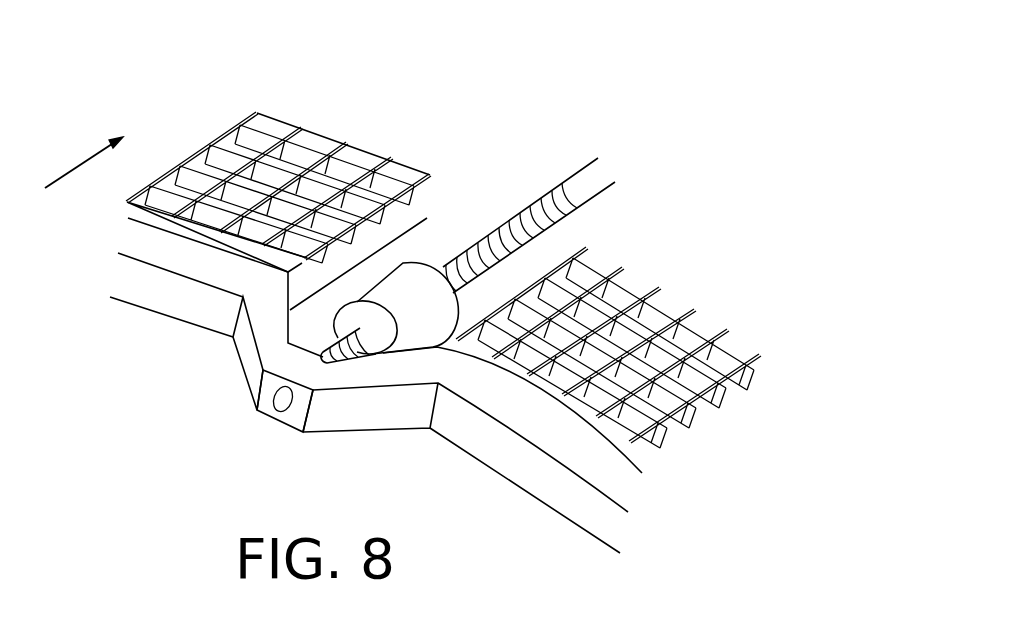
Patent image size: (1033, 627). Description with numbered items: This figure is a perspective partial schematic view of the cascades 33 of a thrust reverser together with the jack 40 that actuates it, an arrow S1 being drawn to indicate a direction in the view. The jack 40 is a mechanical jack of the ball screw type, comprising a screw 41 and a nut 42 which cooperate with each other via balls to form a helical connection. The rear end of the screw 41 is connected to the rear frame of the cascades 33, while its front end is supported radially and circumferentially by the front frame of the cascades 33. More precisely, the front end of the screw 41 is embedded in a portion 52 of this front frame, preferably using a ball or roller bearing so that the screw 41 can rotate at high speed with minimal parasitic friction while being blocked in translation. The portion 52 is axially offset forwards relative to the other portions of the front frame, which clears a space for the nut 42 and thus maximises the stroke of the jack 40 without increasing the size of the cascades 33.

The cascades 33 is at (203, 128).
The jack 40 is at (540, 108).
The screw 41 is at (565, 174).
The nut 42 is at (413, 278).
The portion of the front frame 52 is at (266, 408).
The direction S1 is at (72, 168).